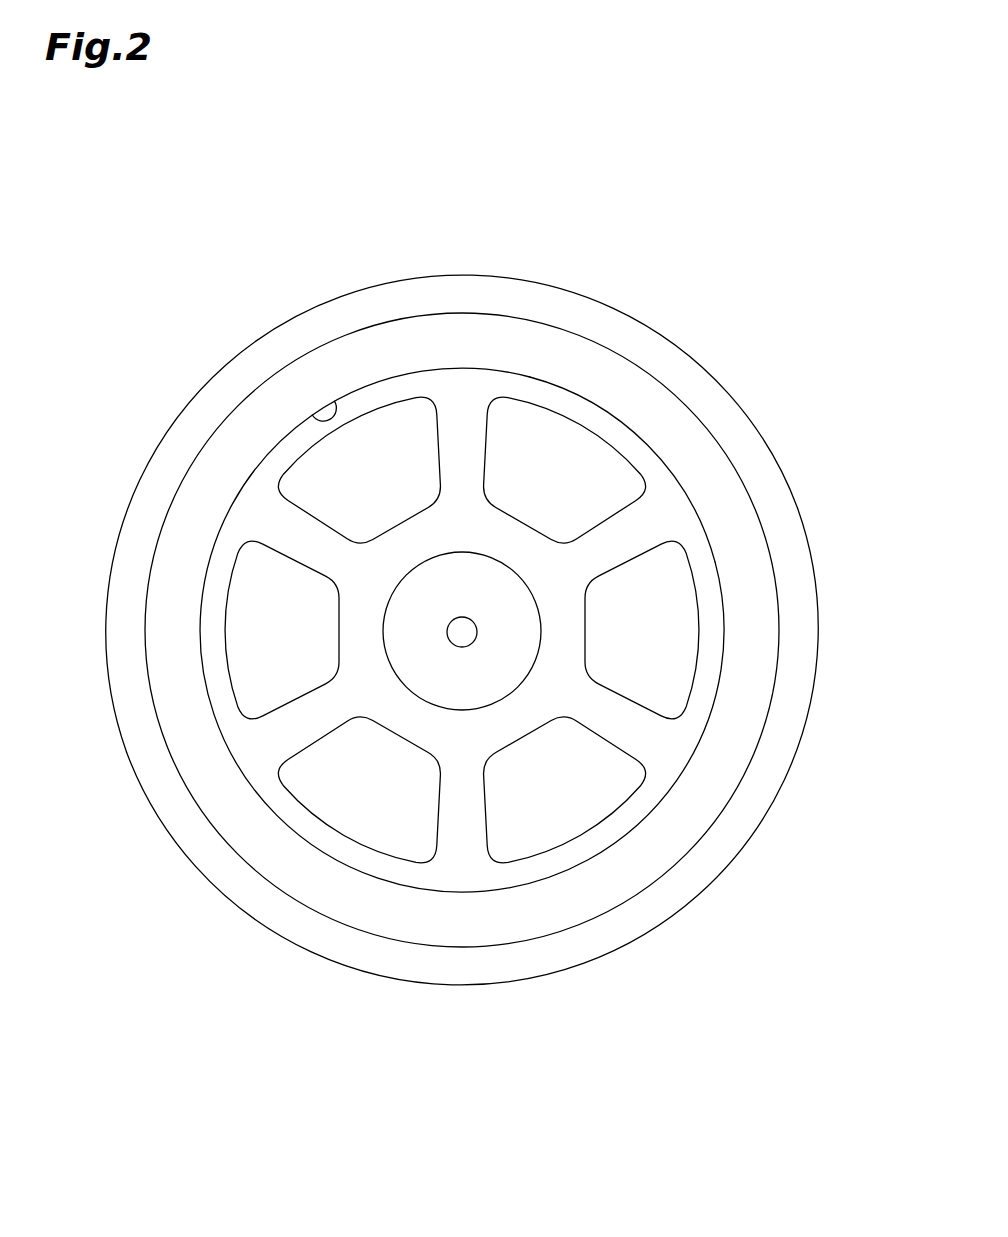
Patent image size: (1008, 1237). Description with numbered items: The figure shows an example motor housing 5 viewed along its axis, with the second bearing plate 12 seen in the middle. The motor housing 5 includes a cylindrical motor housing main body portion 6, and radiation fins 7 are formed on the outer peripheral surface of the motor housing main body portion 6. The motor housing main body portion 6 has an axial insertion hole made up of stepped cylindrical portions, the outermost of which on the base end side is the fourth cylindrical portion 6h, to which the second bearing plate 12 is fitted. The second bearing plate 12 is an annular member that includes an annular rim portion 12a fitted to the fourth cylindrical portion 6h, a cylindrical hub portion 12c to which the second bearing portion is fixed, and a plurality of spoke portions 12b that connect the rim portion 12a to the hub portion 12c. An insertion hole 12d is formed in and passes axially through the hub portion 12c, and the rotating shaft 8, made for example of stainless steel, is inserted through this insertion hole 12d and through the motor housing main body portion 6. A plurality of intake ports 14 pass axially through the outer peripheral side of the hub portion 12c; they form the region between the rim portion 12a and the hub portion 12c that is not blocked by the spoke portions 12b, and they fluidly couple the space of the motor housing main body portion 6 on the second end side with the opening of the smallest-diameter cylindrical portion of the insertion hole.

The motor housing 5 is at (630, 313).
The motor housing main body portion 6 is at (328, 343).
The fourth cylindrical portion 6h is at (318, 424).
The radiation fins 7 is at (172, 843).
The rotating shaft 8 is at (462, 632).
The second bearing plate 12 is at (494, 368).
The rim portion 12a is at (638, 455).
The spoke portions 12b is at (303, 540).
The hub portion 12c is at (563, 635).
The insertion hole 12d is at (400, 637).
The intake ports 14 is at (569, 484).